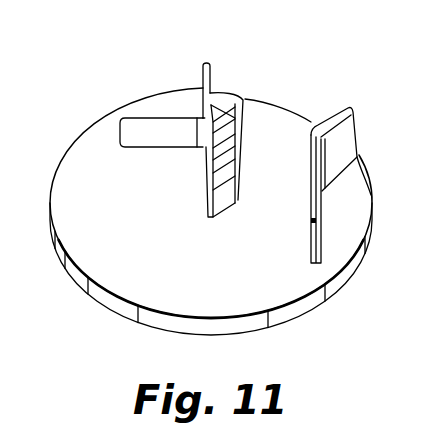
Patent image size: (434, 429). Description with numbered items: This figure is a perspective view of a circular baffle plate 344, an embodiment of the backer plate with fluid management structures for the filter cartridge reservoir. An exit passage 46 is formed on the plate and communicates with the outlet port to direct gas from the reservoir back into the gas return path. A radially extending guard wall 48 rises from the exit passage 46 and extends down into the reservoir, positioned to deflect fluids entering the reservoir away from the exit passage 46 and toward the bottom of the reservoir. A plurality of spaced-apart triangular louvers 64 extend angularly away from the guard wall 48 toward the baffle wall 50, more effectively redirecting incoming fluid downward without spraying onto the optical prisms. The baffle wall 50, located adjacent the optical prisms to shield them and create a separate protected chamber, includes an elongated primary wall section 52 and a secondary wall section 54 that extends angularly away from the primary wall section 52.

The baffle plate 344 is at (50, 180).
The exit passage 46 is at (117, 130).
The guard wall 48 is at (212, 78).
The triangular louvers 64 is at (240, 128).
The baffle wall 50 is at (338, 212).
The primary wall section 52 is at (312, 226).
The secondary wall section 54 is at (338, 141).